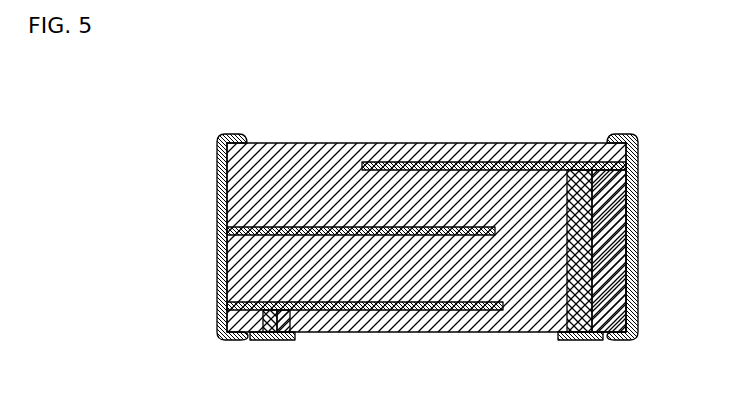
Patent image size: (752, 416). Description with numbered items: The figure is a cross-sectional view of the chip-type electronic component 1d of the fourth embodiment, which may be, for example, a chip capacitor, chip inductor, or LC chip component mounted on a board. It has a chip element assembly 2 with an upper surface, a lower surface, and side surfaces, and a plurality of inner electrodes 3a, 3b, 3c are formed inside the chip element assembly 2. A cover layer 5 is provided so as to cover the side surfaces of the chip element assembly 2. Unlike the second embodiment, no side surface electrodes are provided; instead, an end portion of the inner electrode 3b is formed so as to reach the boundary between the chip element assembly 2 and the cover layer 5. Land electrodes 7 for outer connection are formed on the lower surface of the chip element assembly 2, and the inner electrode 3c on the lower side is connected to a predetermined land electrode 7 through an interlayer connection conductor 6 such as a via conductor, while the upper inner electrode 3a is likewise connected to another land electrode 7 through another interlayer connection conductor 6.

The chip-type electronic component 1d is at (614, 91).
The chip element assembly 2 is at (423, 333).
The inner electrode 3a is at (470, 162).
The inner electrode 3b is at (285, 228).
The inner electrode 3c is at (358, 305).
The cover layer 5 is at (638, 220).
The interlayer connection conductor 6 is at (290, 340).
The land electrode 7 is at (263, 340).